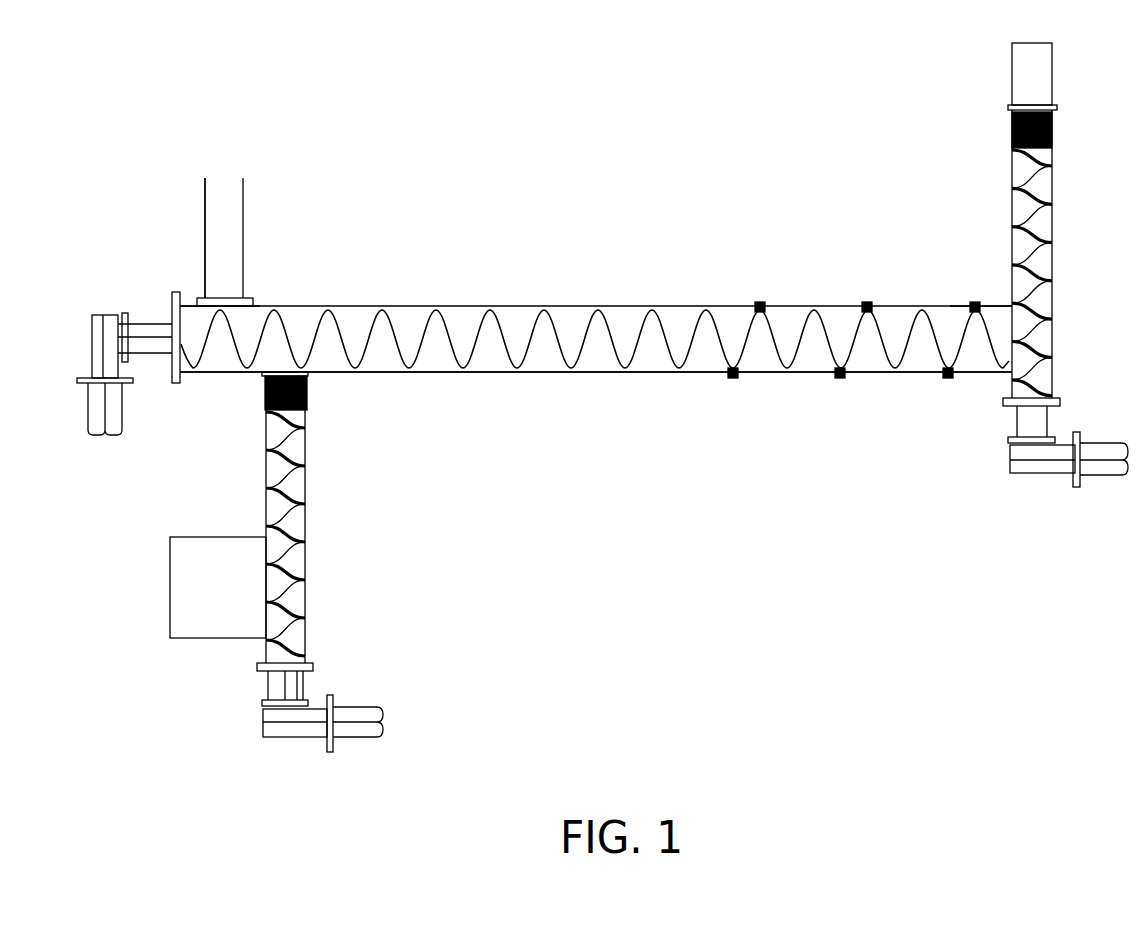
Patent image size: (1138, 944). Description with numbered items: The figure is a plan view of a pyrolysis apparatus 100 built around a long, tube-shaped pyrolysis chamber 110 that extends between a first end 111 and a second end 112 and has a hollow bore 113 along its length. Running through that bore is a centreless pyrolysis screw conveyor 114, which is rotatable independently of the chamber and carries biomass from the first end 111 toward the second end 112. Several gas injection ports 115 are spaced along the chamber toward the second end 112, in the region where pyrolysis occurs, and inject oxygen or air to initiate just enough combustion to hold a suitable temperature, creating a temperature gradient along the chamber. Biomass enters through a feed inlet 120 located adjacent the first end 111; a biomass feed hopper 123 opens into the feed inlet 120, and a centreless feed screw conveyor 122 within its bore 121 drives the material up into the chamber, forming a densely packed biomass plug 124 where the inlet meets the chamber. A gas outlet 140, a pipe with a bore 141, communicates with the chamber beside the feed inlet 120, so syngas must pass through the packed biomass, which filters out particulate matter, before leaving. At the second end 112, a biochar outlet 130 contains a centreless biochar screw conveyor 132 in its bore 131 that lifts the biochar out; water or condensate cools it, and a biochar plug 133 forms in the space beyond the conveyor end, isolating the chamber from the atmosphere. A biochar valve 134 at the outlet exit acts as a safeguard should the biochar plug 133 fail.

The pyrolysis apparatus 100 is at (646, 217).
The pyrolysis chamber 110 is at (619, 304).
The first end 111 is at (321, 300).
The second end 112 is at (941, 289).
The bore 113 is at (460, 335).
The centreless pyrolysis screw conveyor 114 is at (571, 374).
The gas injection port 115 is at (760, 301).
The feed inlet 120 is at (306, 519).
The bore 121 is at (297, 483).
The centreless feed screw conveyor 122 is at (293, 440).
The biomass feed hopper 123 is at (170, 586).
The biomass plug 124 is at (262, 392).
The biochar outlet 130 is at (1052, 213).
The bore 131 is at (1043, 258).
The centreless biochar screw conveyor 132 is at (1043, 180).
The biochar plug 133 is at (1052, 125).
The biochar valve 134 is at (1043, 52).
The gas outlet 140 is at (244, 232).
The bore 141 is at (212, 213).